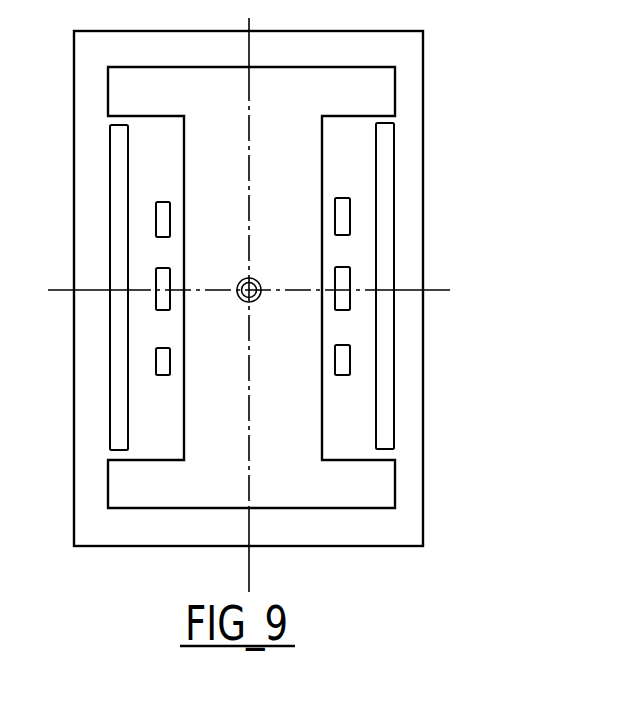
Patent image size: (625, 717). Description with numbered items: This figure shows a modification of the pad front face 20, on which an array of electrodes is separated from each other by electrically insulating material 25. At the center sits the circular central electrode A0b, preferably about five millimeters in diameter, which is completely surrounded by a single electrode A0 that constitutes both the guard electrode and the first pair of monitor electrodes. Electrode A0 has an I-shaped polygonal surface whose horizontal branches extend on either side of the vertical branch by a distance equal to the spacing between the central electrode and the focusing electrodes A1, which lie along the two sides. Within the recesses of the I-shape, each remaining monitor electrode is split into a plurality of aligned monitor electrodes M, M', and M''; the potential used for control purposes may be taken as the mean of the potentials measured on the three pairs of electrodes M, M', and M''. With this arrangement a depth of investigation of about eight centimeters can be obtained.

The housing frame 20 is at (432, 116).
The electrically insulating material 25 is at (251, 270).
The side pole strips A1 is at (118, 244).
The single electrode A0 is at (249, 305).
The central electrode A0b is at (256, 279).
The monitor electrode M is at (249, 385).
The monitor electrode M' is at (250, 306).
The monitor electrode M'' is at (248, 200).